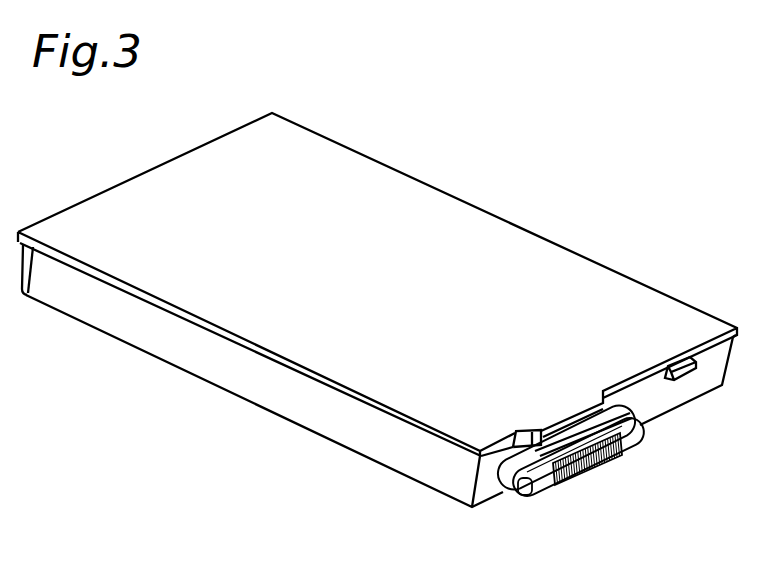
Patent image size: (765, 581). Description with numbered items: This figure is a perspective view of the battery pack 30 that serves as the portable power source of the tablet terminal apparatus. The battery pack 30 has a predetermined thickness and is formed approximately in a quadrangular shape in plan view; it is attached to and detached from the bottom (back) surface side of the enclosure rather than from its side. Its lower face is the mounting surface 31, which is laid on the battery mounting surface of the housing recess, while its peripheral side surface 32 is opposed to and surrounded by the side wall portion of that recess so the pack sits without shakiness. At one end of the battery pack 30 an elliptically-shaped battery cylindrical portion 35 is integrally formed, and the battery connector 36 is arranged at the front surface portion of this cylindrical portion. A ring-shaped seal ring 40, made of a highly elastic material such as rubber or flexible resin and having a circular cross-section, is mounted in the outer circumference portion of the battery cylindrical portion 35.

The battery pack 30 is at (438, 246).
The mounting surface 31 is at (330, 442).
The side surface 32 is at (162, 342).
The battery cylindrical portion 35 is at (638, 436).
The battery connector 36 is at (597, 467).
The seal ring 40 is at (521, 494).